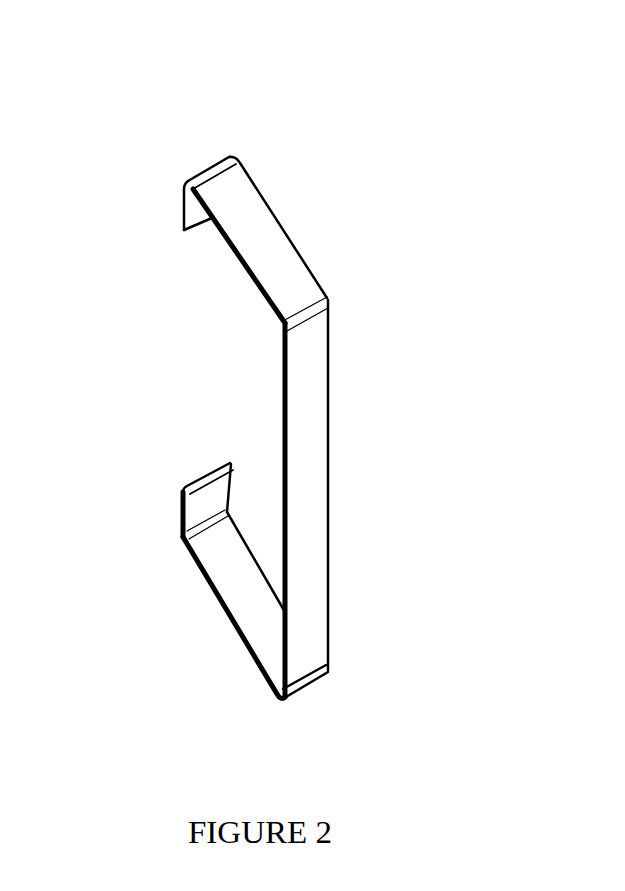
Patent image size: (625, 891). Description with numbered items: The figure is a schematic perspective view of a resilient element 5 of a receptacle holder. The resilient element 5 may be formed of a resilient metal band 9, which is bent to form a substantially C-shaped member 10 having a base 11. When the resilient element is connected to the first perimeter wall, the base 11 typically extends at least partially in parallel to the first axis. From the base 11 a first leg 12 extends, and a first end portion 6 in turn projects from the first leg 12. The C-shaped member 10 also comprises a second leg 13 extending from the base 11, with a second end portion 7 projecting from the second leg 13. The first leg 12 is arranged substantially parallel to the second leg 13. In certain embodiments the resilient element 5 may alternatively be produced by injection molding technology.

The resilient element 5 is at (260, 380).
The second end portion 7 is at (181, 207).
The second leg 13 is at (252, 222).
The base 11 is at (263, 468).
The C-shaped member 10 is at (285, 462).
The metal band 9 is at (330, 672).
The first leg 12 is at (240, 613).
The first end portion 6 is at (202, 498).